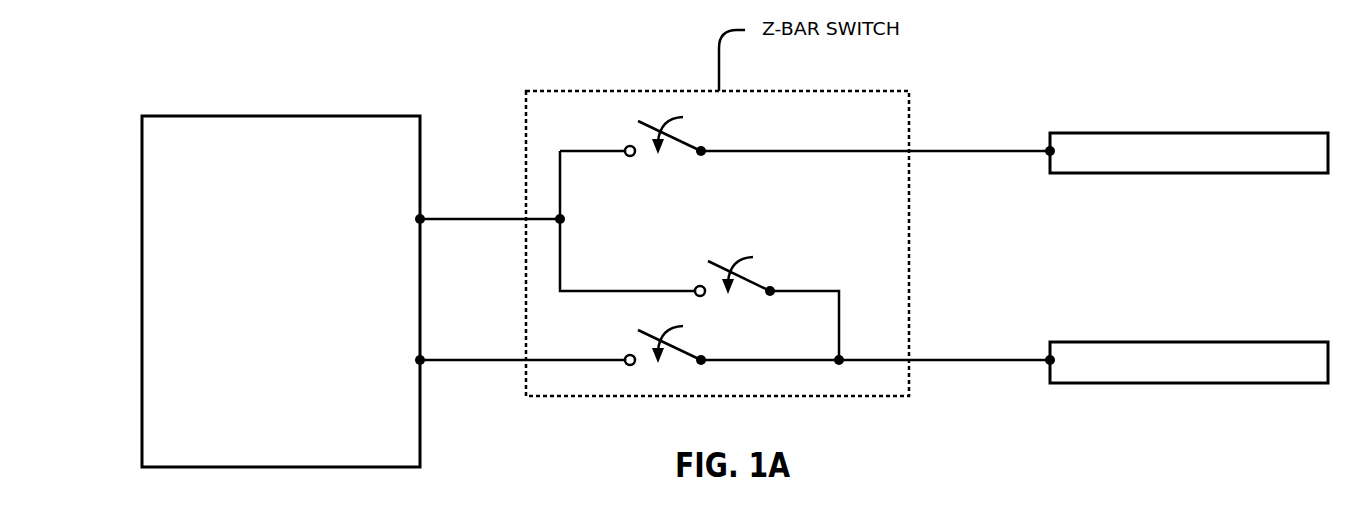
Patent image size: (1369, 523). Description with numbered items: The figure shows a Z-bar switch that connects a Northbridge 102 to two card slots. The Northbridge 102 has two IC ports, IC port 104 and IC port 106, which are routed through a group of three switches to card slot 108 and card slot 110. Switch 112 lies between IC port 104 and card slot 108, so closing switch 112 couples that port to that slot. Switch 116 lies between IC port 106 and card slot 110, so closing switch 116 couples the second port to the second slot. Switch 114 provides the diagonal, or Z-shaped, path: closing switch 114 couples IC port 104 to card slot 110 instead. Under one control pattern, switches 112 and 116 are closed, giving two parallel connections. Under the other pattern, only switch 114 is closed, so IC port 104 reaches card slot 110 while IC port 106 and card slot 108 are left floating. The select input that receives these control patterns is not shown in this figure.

The Northbridge 102 is at (281, 291).
The IC port 104 is at (431, 219).
The IC port 106 is at (463, 360).
The card slot 108 is at (1186, 153).
The card slot 110 is at (1186, 362).
The switch 112 is at (837, 136).
The switch 114 is at (795, 308).
The switch 116 is at (837, 345).